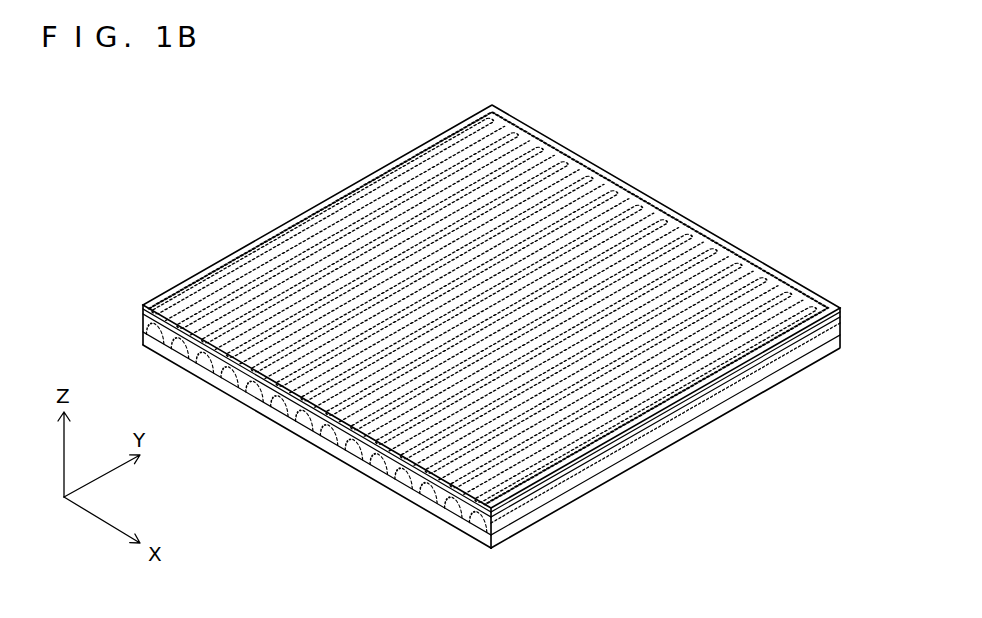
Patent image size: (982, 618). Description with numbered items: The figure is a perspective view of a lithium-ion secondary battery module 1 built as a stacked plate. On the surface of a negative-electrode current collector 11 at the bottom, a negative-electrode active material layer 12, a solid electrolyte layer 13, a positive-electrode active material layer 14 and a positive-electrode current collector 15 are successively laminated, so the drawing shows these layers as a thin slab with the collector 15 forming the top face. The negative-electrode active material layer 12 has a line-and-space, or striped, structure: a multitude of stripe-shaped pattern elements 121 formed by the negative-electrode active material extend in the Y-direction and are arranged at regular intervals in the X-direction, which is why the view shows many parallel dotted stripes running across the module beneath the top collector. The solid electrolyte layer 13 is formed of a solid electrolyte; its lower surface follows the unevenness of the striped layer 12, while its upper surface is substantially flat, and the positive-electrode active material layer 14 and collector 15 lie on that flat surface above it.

The lithium-ion secondary battery module 1 is at (454, 311).
The negative-electrode current collector 11 is at (767, 382).
The negative-electrode active material layer 12 is at (486, 291).
The stripe-shaped pattern element 121 is at (565, 186).
The solid electrolyte layer 13 is at (143, 318).
The positive-electrode active material layer 14 is at (677, 412).
The positive-electrode current collector 15 is at (367, 177).